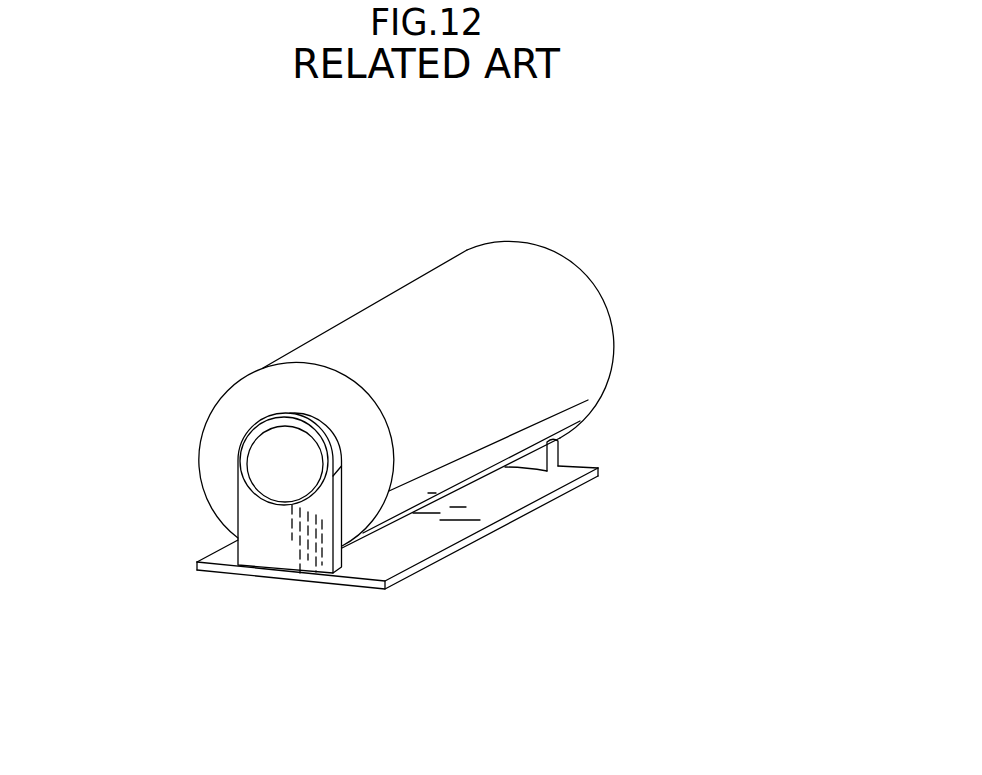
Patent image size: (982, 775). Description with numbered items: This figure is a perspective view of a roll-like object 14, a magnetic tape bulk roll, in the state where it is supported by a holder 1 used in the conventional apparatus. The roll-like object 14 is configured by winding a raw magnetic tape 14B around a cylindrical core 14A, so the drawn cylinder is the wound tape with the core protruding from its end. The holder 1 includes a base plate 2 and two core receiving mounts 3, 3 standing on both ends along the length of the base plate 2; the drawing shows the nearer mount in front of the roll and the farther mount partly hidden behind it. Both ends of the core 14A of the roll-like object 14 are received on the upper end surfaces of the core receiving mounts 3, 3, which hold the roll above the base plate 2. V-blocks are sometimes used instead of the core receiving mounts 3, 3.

The holder 1 is at (614, 458).
The base plate 2 is at (495, 524).
The core receiving mount 3 is at (247, 542).
The roll-like object 14 is at (358, 295).
The cylindrical core 14A is at (248, 438).
The raw magnetic tape 14B is at (550, 283).